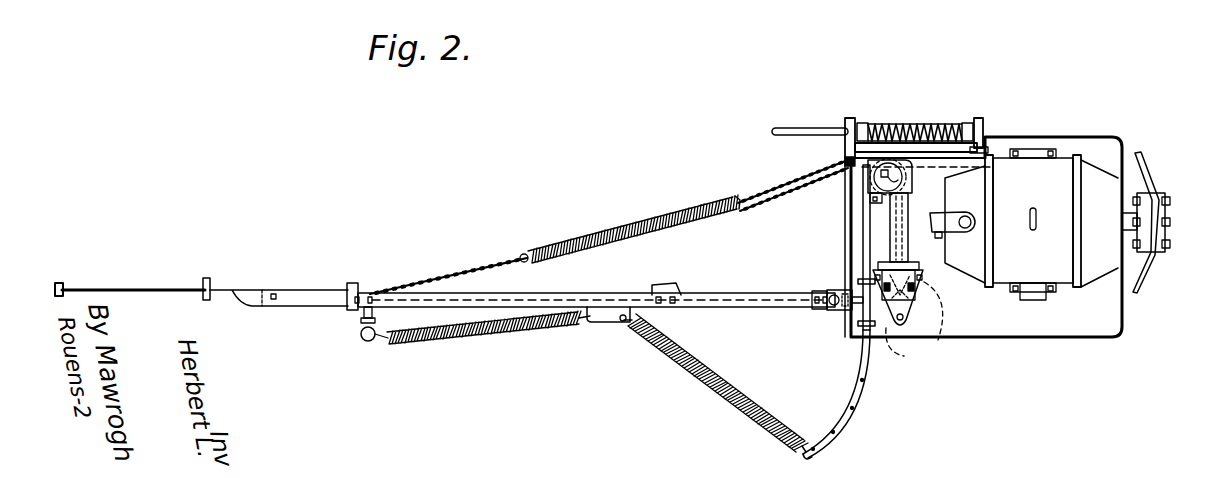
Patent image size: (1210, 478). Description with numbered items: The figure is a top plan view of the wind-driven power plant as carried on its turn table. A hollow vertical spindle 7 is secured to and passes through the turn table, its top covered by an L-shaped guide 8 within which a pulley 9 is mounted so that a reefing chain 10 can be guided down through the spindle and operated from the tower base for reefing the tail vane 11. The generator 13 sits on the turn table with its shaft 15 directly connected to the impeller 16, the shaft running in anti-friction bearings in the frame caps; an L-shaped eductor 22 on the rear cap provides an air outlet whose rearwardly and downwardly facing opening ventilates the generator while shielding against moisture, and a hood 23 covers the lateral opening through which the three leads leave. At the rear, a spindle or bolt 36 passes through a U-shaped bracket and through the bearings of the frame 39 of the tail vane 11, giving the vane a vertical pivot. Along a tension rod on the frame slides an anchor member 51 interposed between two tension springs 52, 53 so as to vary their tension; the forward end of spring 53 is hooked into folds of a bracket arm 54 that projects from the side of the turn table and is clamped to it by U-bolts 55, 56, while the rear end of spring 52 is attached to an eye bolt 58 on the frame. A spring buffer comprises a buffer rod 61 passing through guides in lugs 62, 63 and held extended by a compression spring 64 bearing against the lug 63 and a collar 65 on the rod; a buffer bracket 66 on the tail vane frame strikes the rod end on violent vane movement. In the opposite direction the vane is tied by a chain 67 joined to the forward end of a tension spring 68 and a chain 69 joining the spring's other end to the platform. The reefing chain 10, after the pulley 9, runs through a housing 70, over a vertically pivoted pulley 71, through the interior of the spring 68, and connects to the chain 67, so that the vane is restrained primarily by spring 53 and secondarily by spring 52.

The vertical mast or spindle 7 is at (902, 347).
The cap or L-shaped guide 8 is at (907, 312).
The pulley 9 is at (939, 311).
The reefing chain 10 is at (825, 182).
The tail vane 11 is at (272, 289).
The generator 13 is at (1036, 170).
The shaft 15 is at (1128, 222).
The impeller 16 is at (1149, 190).
The L-shaped eductor 22 is at (936, 231).
The cap or hood 23 is at (1028, 293).
The spindle or bolt 36 is at (829, 307).
The frame 39 is at (728, 293).
The sliding anchor member 51 is at (605, 323).
The tension spring 52 is at (507, 335).
The tension spring 53 is at (712, 392).
The bracket arm 54 is at (854, 405).
The U-bolt or clamp 55 is at (861, 326).
The U-bolt or clamp 56 is at (858, 281).
The eye bolt 58 is at (361, 338).
The buffer rod 61 is at (789, 128).
The lug 62 is at (850, 117).
The bracket lug 63 is at (982, 118).
The compression spring 64 is at (897, 128).
The collar 65 is at (866, 128).
The buffer bracket 66 is at (666, 288).
The chain 67 is at (431, 280).
The tension spring 68 is at (597, 232).
The chain 69 is at (779, 186).
The housing 70 is at (892, 231).
The vertically pivoted pulley 71 is at (906, 183).